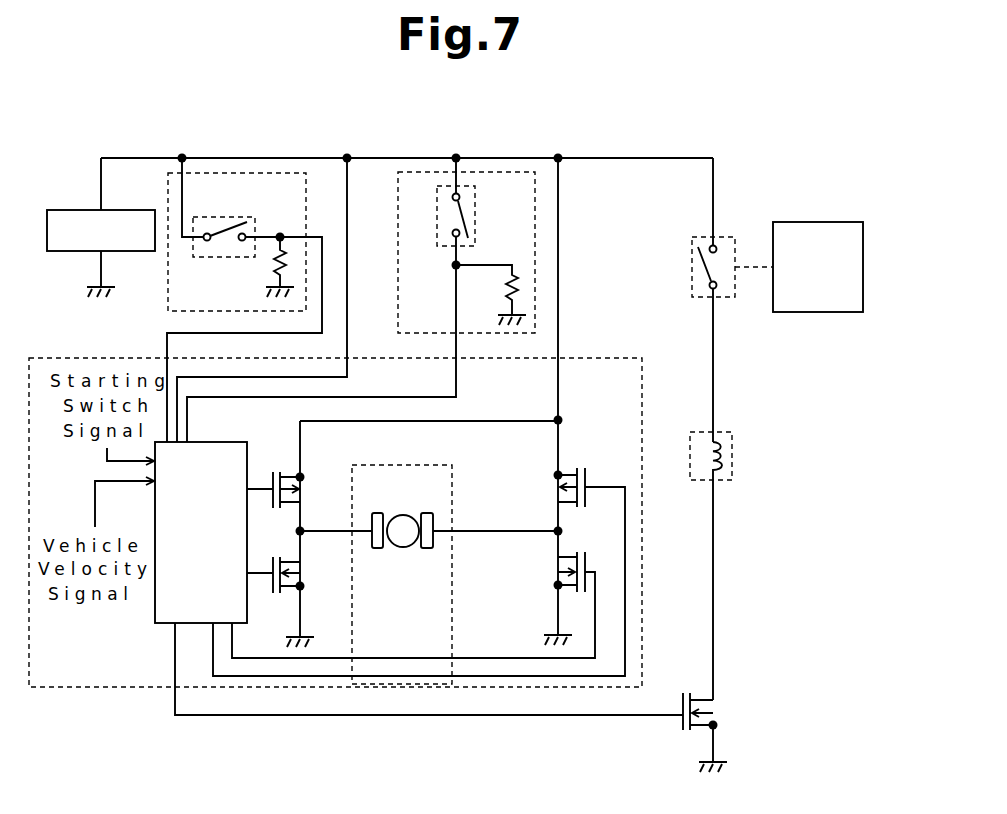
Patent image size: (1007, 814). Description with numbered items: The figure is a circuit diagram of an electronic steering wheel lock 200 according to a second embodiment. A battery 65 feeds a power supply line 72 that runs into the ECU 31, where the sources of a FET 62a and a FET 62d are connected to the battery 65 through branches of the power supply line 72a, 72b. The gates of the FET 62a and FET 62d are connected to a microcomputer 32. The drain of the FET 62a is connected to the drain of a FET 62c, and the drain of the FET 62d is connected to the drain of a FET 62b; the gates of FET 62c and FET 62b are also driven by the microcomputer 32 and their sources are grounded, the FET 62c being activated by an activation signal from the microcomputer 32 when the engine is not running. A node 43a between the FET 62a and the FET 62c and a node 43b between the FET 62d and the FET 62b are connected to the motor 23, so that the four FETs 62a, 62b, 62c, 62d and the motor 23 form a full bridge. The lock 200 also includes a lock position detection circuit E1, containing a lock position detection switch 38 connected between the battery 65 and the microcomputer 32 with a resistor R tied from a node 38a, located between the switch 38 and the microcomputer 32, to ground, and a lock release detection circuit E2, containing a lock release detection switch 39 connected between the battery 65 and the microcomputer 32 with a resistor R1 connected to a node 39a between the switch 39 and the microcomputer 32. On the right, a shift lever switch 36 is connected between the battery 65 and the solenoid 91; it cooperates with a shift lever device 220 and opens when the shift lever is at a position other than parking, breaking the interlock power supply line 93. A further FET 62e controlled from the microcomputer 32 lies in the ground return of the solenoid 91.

The electronic steering wheel lock 200 is at (735, 128).
The interlock power supply line 93 is at (714, 170).
The shift lever device 220 is at (817, 222).
The battery 65 is at (127, 210).
The lock position detection switch 38 is at (209, 217).
The node 38a is at (280, 234).
The lock position detection circuit E1 is at (307, 222).
The lock release detection circuit E2 is at (398, 228).
The lock release detection switch 39 is at (475, 207).
The node 39a is at (454, 266).
The resistor R is at (276, 266).
The resistor R1 is at (509, 292).
The shift lever switch 36 is at (692, 247).
The power supply line 72 is at (559, 296).
The ECU 31 is at (378, 358).
The FET 62a is at (270, 470).
The power supply line branch 72a is at (337, 421).
The power supply line branch 72b is at (557, 436).
The FET 62d is at (586, 478).
The motor 23 is at (396, 514).
The FET 62b is at (587, 560).
The node 43a is at (304, 536).
The node 43b is at (553, 534).
The FET 62c is at (270, 585).
The microcomputer 32 is at (160, 624).
The solenoid 91 is at (732, 432).
The FET 62e is at (682, 726).